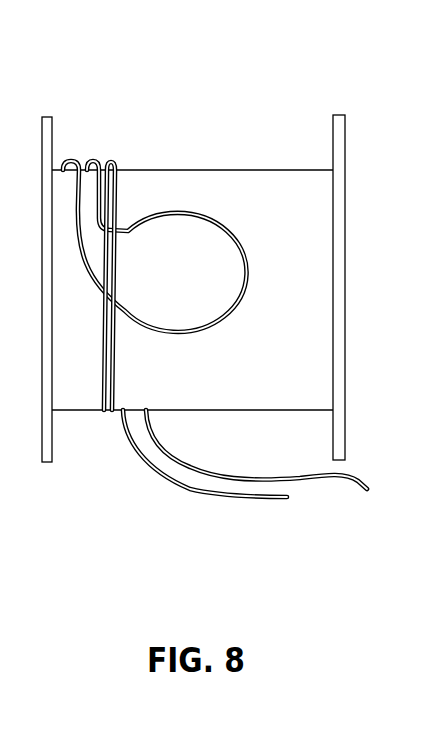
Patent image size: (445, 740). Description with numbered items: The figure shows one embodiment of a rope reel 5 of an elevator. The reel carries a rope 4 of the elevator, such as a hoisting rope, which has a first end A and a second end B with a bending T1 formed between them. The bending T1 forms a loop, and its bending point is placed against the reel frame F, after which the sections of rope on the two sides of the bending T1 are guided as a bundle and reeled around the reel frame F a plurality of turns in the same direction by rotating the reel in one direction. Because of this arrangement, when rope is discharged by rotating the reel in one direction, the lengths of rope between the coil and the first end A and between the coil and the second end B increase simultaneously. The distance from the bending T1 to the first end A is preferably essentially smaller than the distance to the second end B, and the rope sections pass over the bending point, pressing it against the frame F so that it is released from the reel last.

The rope reel 5 is at (165, 82).
The reel frame F is at (92, 397).
The bending T1 is at (247, 275).
The rope 4 is at (113, 168).
The first end A is at (284, 502).
The second end B is at (370, 494).